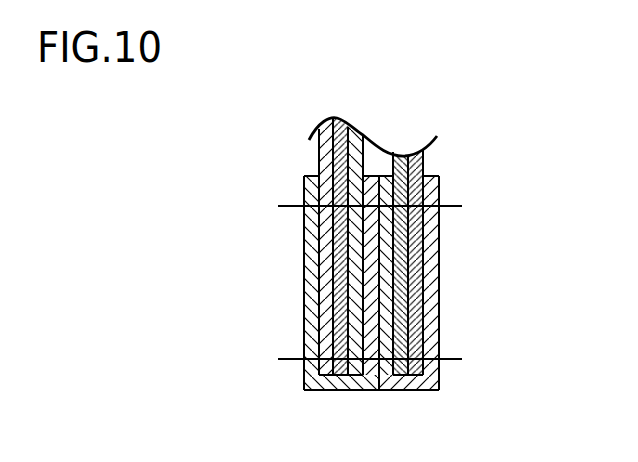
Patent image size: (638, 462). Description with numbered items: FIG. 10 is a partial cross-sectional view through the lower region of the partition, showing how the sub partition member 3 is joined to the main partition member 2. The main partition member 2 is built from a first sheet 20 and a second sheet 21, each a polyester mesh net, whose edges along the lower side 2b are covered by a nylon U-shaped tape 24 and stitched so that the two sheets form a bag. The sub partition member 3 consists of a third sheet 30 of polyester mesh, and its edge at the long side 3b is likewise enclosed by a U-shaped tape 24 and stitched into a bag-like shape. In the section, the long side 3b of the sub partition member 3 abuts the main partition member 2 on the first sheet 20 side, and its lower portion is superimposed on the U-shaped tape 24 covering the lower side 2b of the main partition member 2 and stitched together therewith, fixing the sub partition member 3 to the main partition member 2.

The main partition member 2 is at (432, 157).
The lower side 2b is at (440, 228).
The first sheet 20 is at (402, 300).
The second sheet 21 is at (420, 258).
The U-shaped tape 24 is at (308, 263).
The sub partition member 3 is at (303, 157).
The long side 3b is at (305, 237).
The third sheet 30 is at (333, 177).